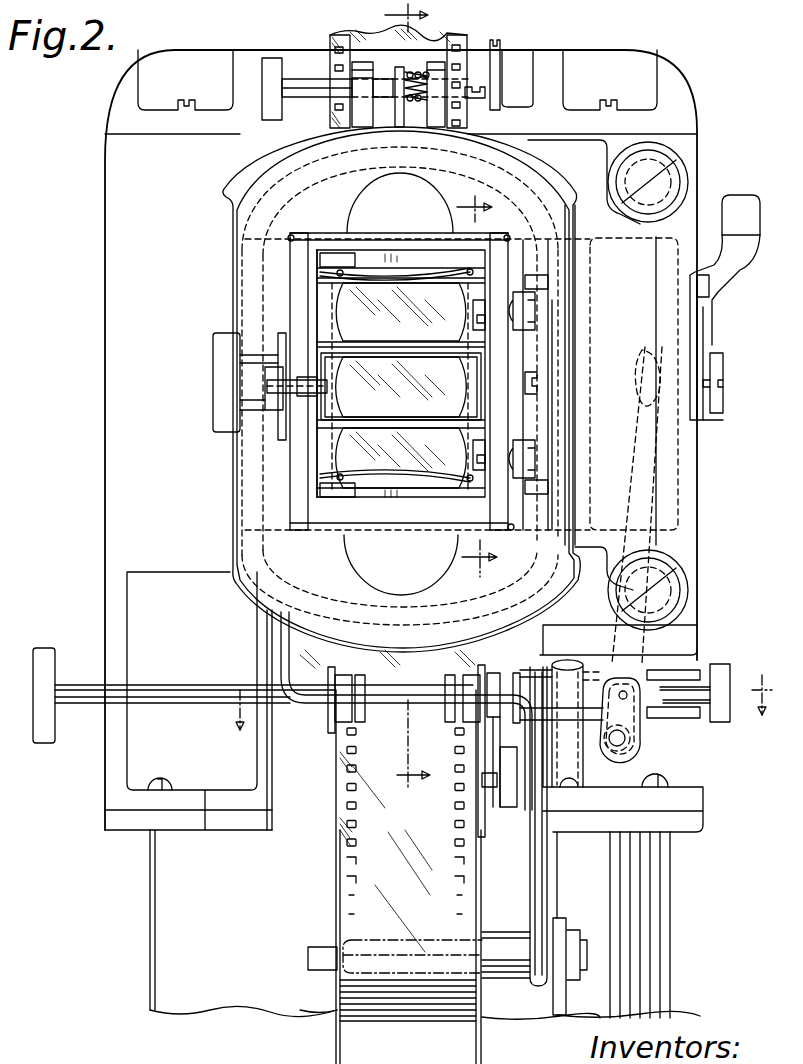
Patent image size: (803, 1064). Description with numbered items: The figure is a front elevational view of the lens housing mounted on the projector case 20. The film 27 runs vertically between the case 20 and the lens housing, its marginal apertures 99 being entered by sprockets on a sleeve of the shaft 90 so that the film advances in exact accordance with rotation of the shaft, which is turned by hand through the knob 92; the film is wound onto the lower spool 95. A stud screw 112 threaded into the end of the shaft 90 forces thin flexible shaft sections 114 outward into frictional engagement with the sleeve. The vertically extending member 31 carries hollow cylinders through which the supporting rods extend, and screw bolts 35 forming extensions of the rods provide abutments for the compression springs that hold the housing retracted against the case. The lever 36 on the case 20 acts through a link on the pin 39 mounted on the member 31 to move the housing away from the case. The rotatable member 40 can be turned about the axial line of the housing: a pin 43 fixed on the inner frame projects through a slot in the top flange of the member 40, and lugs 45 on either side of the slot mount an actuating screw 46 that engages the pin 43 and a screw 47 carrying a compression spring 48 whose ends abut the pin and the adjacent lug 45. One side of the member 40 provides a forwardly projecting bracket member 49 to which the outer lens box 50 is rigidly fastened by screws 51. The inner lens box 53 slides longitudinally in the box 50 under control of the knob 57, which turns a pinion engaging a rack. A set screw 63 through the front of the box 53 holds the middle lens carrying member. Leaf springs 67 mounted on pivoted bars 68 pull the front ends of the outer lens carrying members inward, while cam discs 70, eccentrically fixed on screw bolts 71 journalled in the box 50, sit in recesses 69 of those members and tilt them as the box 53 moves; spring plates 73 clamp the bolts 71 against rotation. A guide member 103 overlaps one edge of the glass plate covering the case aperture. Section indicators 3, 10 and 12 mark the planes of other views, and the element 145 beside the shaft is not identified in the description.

The section line 3- 3 is at (409, 408).
The section line 10- 10 is at (492, 386).
The section line 12- 12 is at (502, 716).
The case 20 is at (105, 465).
The film 27 is at (345, 755).
The vertically extending member 31 is at (640, 303).
The screw bolts 35 is at (680, 178).
The lever 36 is at (728, 288).
The pin 39 is at (716, 394).
The rotatable member 40 is at (235, 197).
The pin 43 is at (403, 66).
The lugs 45 is at (358, 62).
The actuating screw 46 is at (272, 58).
The screw 47 is at (432, 80).
The compression spring 48 is at (415, 118).
The bracket member 49 is at (555, 427).
The outer lens box 50 is at (305, 294).
The screws 51 is at (290, 240).
The inner lens box 53 is at (480, 398).
The knob 57 is at (213, 384).
The set screw 63 is at (275, 412).
The leaf springs 67 is at (362, 258).
The bars 68 is at (402, 258).
The recess 69 is at (476, 330).
The cam disc 70 is at (475, 308).
The screw bolt 71 is at (538, 327).
The spring plates 73 is at (520, 275).
The shaft 90 is at (72, 705).
The knob 92 is at (50, 655).
The lower spool 95 is at (338, 1035).
The marginal apertures 99 is at (345, 830).
The guide member 103 is at (345, 112).
The stud screw 112 is at (730, 666).
The flexible sections 114 is at (700, 690).
The cam 145 is at (570, 755).